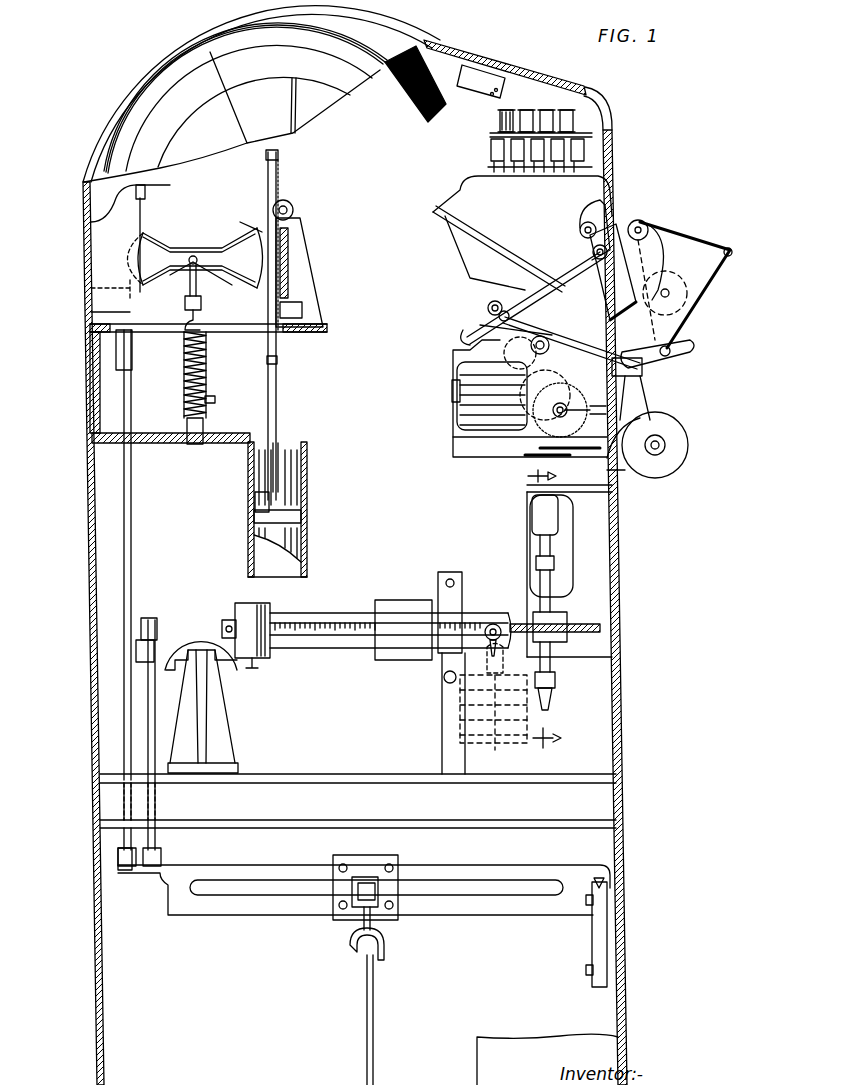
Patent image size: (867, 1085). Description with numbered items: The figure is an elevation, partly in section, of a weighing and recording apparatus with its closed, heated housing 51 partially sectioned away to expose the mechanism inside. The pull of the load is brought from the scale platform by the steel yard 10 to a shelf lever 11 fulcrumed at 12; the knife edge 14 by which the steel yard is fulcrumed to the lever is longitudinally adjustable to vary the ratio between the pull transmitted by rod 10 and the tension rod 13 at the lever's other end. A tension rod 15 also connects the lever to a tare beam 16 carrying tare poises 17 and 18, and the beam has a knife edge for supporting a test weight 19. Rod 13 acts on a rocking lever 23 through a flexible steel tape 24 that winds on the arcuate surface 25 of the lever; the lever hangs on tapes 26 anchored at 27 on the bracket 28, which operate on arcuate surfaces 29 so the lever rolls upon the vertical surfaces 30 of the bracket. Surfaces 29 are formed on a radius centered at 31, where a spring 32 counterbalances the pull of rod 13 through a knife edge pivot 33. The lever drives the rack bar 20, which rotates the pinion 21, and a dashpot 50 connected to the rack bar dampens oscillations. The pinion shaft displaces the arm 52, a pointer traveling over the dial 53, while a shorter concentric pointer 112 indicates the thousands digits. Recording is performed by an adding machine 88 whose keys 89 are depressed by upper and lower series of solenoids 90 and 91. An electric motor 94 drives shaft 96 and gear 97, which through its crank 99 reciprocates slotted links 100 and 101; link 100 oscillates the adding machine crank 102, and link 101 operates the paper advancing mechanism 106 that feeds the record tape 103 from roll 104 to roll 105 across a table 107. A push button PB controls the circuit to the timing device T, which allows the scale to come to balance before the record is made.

The steel yard 10 is at (376, 995).
The shelf lever 11 is at (502, 870).
The fulcrum 12 is at (604, 886).
The tension rod 13 is at (124, 714).
The knife edge 14 is at (370, 878).
The tension rod 15 is at (152, 706).
The tare beam 16 is at (328, 622).
The tare poise 17 is at (394, 605).
The tare poise 18 is at (270, 612).
The test weight 19 is at (445, 676).
The rack bar 20 is at (278, 360).
The pinion 21 is at (294, 208).
The rocking lever 23 is at (260, 232).
The flexible steel tape 24 is at (90, 312).
The arcuate surface 25 is at (90, 288).
The tapes 26 is at (143, 215).
The anchor 27 is at (145, 186).
The bracket 28 is at (114, 202).
The arcuate surfaces 29 is at (150, 252).
The vertical surfaces 30 is at (135, 290).
The center 31 is at (196, 258).
The spring 32 is at (208, 372).
The knife edge pivot 33 is at (197, 265).
The dashpot 50 is at (307, 510).
The housing 51 is at (90, 525).
The arm 52 is at (205, 60).
The dial 53 is at (178, 88).
The adding machine 88 is at (455, 188).
The keys 89 is at (488, 166).
The solenoids 90 is at (500, 118).
The solenoids 91 is at (492, 148).
The electric motor 94 is at (457, 412).
The shaft 96 is at (537, 378).
The gear 97 is at (538, 430).
The crank 99 is at (496, 318).
The link 100 is at (530, 298).
The link 101 is at (565, 343).
The adding machine crank 102 is at (580, 232).
The record tape 103 is at (642, 220).
The roll 104 is at (675, 280).
The roll 105 is at (680, 440).
The paper advancing mechanism 106 is at (650, 368).
The table 107 is at (722, 244).
The pointer 112 is at (297, 118).
The push button PB is at (492, 70).
The timing device T is at (496, 80).